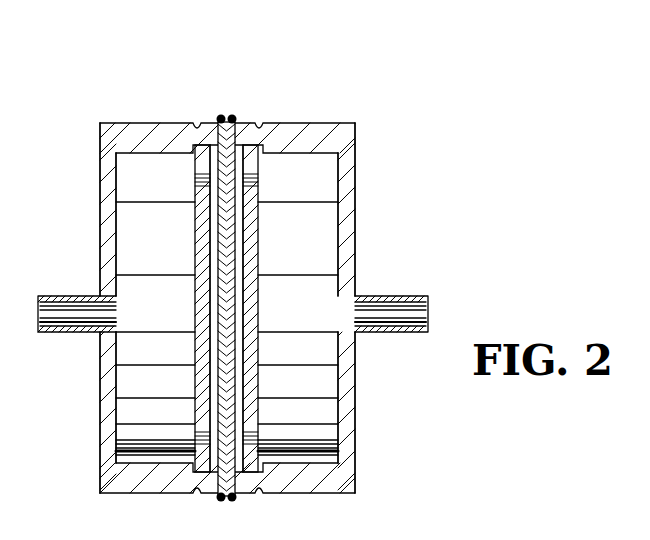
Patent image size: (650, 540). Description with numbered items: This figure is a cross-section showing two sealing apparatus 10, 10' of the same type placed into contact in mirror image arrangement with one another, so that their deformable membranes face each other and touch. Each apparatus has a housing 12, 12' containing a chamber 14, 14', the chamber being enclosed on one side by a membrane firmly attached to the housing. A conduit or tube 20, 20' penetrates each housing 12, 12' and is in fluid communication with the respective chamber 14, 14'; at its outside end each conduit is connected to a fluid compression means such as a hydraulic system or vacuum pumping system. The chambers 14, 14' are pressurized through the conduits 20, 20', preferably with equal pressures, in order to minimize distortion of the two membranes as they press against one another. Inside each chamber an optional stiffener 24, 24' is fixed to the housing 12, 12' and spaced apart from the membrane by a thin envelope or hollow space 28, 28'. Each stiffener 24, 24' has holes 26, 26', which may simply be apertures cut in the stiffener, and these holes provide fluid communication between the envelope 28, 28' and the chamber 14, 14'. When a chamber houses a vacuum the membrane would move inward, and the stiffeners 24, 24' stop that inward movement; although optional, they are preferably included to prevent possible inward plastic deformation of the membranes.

The sealing apparatus 10 is at (113, 262).
The sealing apparatus 10' is at (357, 257).
The housing 12 is at (79, 308).
The housing 12' is at (382, 308).
The chamber 14 is at (155, 313).
The chamber 14' is at (298, 313).
The conduit 20 is at (74, 287).
The conduit 20' is at (398, 287).
The stiffener 24 is at (179, 308).
The stiffener 24' is at (283, 308).
The holes 26 is at (158, 487).
The holes 26' is at (298, 487).
The envelope 28 is at (210, 282).
The envelope 28' is at (254, 280).